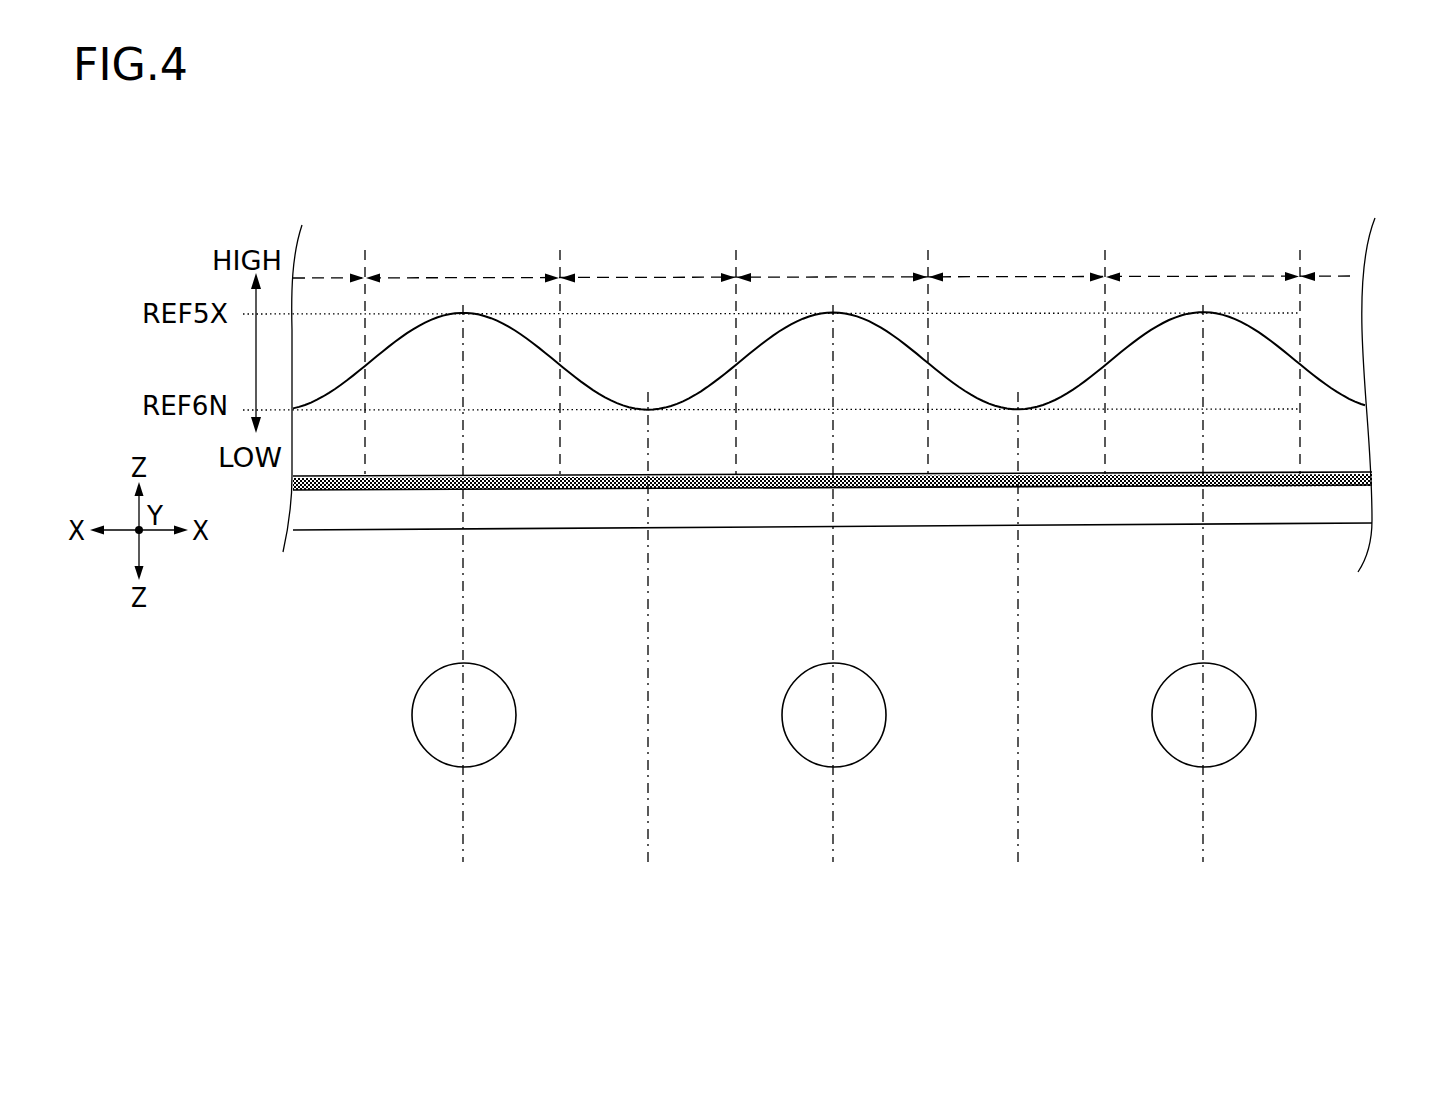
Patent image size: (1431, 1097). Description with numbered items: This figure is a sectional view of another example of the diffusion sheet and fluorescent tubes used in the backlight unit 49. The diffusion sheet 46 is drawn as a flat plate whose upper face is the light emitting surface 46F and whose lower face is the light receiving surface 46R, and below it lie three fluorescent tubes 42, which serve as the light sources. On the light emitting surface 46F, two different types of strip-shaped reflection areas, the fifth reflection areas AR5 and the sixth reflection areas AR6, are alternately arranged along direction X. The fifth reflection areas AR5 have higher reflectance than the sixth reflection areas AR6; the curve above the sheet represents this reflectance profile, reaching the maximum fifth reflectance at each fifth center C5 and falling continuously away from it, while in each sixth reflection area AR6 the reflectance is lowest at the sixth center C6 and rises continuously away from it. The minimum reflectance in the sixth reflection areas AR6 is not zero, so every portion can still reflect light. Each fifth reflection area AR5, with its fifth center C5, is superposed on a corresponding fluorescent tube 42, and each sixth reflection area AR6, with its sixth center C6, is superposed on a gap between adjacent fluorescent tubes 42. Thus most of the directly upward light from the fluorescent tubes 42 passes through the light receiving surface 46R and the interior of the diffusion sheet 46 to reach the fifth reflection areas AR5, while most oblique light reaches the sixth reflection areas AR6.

The backlight unit 49 is at (156, 205).
The fluorescent tube 42 is at (834, 715).
The diffusion sheet 46 is at (857, 500).
The light emitting surface 46F is at (1304, 471).
The light receiving surface 46R is at (1306, 532).
The fifth reflection area AR5 is at (822, 259).
The sixth reflection area AR6 is at (832, 357).
The fifth center C5 is at (833, 568).
The sixth center C6 is at (833, 611).